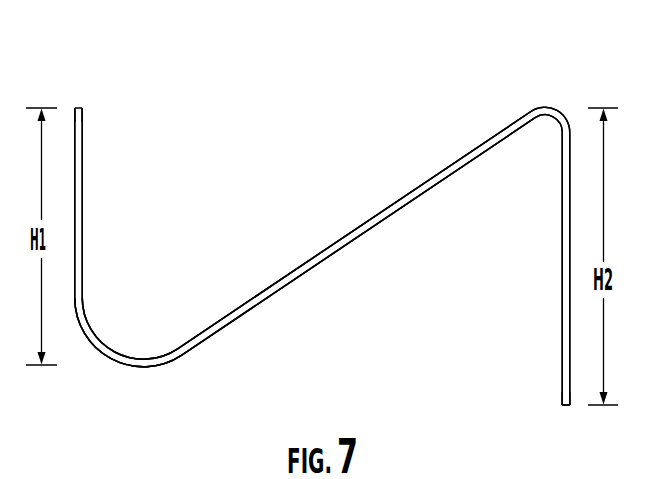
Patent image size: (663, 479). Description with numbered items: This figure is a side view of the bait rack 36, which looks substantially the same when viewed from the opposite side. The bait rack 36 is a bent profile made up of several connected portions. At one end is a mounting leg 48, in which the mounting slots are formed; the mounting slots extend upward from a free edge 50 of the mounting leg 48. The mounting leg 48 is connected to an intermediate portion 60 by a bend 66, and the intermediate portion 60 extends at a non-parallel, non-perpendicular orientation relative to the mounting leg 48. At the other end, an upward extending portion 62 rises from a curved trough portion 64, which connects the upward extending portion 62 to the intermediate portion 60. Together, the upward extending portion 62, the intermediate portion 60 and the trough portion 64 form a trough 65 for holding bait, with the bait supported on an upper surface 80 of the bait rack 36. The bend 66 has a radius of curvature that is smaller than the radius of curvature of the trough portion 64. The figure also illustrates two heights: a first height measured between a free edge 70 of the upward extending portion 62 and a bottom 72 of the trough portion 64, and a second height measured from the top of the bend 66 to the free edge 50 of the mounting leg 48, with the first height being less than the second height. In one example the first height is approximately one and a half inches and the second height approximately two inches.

The bait rack 36 is at (457, 165).
The mounting leg 48 is at (571, 374).
The free edge 50 is at (567, 406).
The intermediate portion 60 is at (373, 225).
The upward extending portion 62 is at (83, 151).
The trough portion 64 is at (147, 367).
The trough 65 is at (190, 195).
The bend 66 is at (553, 107).
The free edge 70 is at (76, 106).
The bottom 72 is at (138, 367).
The upper surface 80 is at (330, 251).